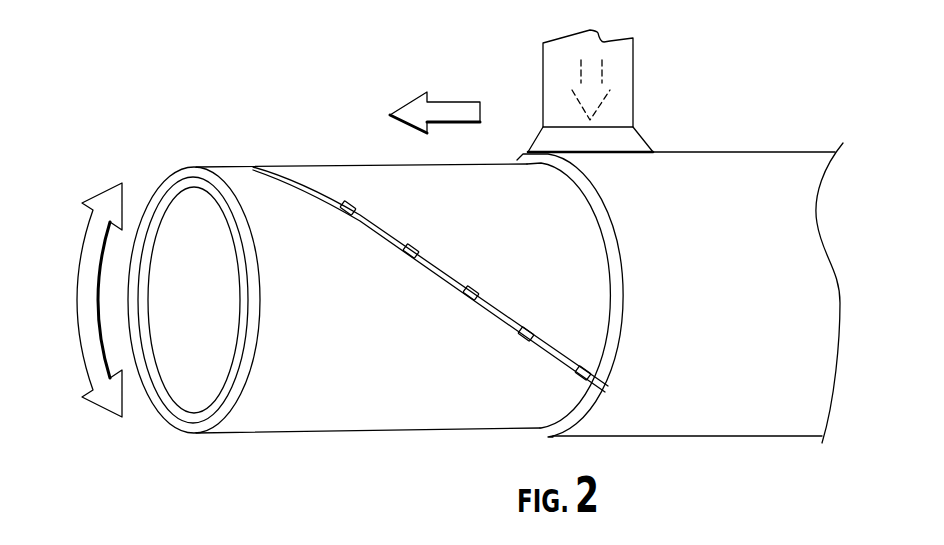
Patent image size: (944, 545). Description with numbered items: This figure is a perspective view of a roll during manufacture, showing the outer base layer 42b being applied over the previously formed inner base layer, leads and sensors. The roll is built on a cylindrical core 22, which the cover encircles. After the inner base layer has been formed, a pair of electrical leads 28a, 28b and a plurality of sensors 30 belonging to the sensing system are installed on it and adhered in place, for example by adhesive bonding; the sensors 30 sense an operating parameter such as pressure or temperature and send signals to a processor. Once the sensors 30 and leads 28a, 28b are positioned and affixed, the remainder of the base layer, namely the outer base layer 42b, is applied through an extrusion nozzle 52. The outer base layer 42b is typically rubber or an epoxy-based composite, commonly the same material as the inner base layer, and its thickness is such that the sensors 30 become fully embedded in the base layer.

The cylindrical core 22 is at (183, 187).
The electrical lead 28a is at (278, 167).
The electrical lead 28b is at (429, 281).
The sensors 30 is at (352, 204).
The extrusion nozzle 52 is at (632, 138).
The outer base layer 42b is at (743, 177).